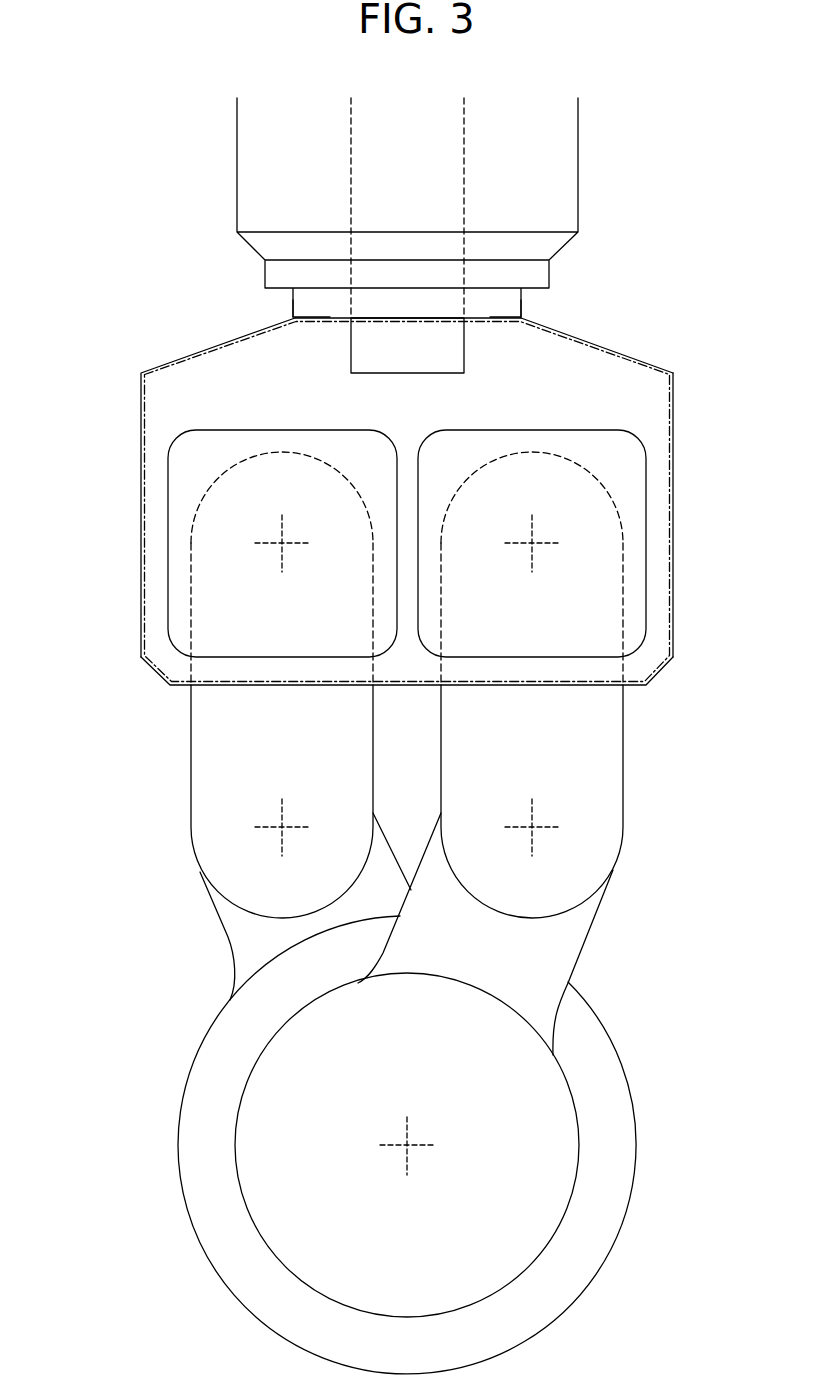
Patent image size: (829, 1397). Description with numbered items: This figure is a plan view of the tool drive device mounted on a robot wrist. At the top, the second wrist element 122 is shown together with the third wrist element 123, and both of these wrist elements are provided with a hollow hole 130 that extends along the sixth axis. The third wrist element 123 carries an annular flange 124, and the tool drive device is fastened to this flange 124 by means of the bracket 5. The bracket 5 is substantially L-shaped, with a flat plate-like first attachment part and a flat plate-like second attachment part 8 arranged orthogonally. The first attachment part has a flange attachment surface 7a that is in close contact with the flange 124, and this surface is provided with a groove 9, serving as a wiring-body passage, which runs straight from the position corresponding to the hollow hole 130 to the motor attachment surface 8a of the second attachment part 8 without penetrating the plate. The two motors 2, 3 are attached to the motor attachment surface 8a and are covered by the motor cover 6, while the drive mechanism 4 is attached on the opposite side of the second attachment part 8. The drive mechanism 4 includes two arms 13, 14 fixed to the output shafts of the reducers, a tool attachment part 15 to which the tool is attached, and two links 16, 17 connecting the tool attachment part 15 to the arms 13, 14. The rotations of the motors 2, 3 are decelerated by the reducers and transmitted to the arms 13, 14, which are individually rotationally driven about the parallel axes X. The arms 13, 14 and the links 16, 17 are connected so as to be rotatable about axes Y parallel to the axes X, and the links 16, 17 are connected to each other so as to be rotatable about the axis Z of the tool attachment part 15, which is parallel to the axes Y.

The motor 2 is at (648, 525).
The motor 3 is at (168, 535).
The drive mechanism 4 is at (118, 988).
The bracket 5 is at (674, 563).
The motor cover 6 is at (674, 448).
The flange attachment surface 7a is at (313, 318).
The second attachment part 8 is at (674, 620).
The motor attachment surface 8a is at (635, 400).
The groove 9 is at (463, 359).
The arm 13 is at (624, 770).
The arm 14 is at (192, 758).
The tool attachment part 15 is at (633, 1176).
The link 16 is at (588, 940).
The link 17 is at (228, 930).
The second wrist element 122 is at (578, 150).
The third wrist element 123 is at (293, 303).
The annular flange 124 is at (521, 300).
The hollow hole 130 is at (461, 144).
The axes X is at (284, 543).
The axes Y is at (284, 827).
The axis Z is at (409, 1145).